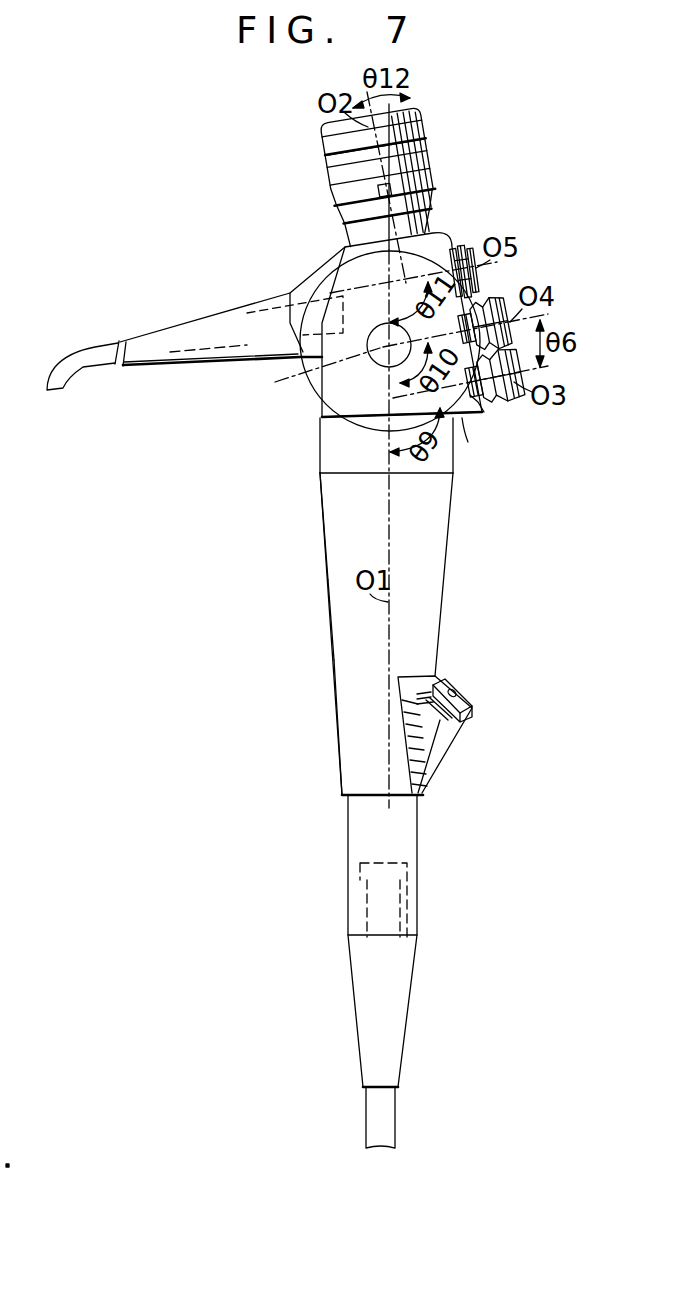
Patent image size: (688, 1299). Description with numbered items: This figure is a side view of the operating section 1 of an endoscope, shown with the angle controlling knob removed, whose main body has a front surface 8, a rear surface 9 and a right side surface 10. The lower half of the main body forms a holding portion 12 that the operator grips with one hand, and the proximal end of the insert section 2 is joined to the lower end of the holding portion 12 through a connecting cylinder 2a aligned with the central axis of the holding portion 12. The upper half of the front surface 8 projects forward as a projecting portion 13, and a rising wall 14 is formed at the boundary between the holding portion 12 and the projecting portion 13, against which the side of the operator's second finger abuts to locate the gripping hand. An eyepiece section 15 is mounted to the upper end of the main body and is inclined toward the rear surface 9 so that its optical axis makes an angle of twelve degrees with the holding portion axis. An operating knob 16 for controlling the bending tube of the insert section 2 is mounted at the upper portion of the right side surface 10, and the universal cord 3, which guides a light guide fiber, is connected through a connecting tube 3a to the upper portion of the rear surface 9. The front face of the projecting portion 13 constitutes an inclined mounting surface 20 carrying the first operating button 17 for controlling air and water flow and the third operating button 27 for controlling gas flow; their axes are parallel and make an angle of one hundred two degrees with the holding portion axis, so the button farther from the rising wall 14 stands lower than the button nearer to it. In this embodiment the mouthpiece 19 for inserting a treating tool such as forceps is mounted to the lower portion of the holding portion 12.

The operating section 1 is at (320, 452).
The insert section 2 is at (396, 1112).
The connecting cylinder 2a is at (347, 968).
The universal cord 3 is at (83, 362).
The connecting tube 3a is at (190, 323).
The front surface 8 is at (446, 572).
The rear surface 9 is at (330, 657).
The right side surface 10 is at (340, 617).
The holding portion 12 is at (326, 527).
The projecting portion 13 is at (462, 420).
The rising wall 14 is at (453, 473).
The eyepiece section 15 is at (428, 128).
The operating knob 16 is at (303, 368).
The first operating button 17 is at (494, 306).
The mouthpiece 19 is at (453, 690).
The mounting surface 20 is at (475, 405).
The third operating button 27 is at (463, 247).